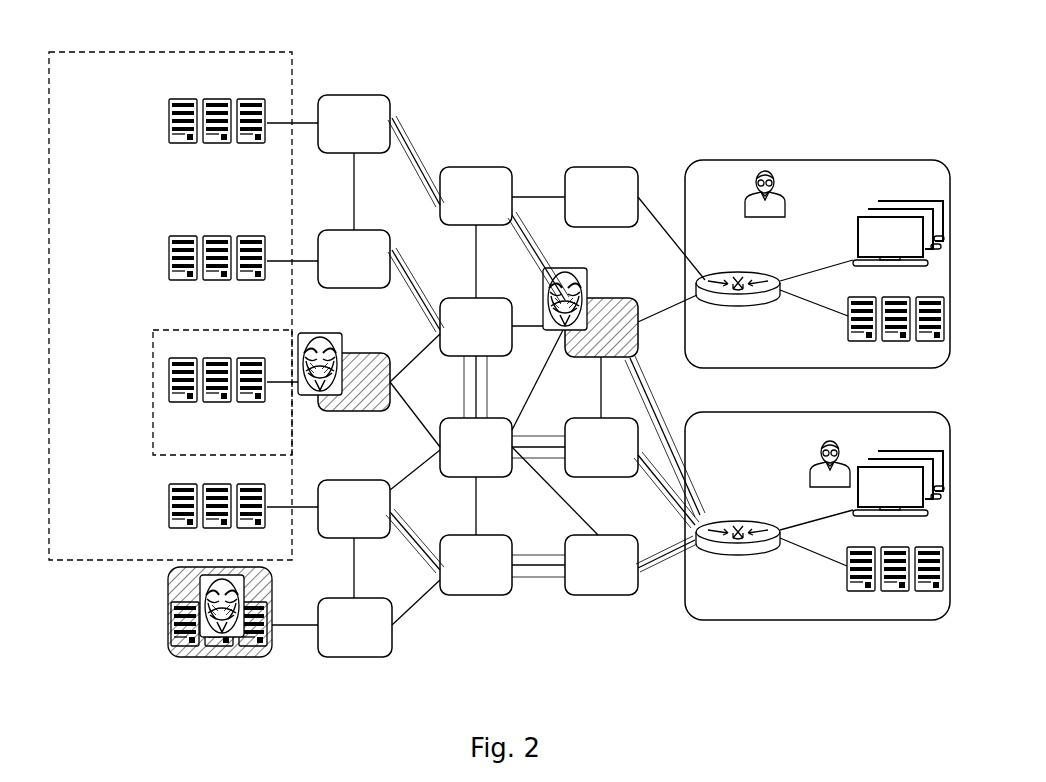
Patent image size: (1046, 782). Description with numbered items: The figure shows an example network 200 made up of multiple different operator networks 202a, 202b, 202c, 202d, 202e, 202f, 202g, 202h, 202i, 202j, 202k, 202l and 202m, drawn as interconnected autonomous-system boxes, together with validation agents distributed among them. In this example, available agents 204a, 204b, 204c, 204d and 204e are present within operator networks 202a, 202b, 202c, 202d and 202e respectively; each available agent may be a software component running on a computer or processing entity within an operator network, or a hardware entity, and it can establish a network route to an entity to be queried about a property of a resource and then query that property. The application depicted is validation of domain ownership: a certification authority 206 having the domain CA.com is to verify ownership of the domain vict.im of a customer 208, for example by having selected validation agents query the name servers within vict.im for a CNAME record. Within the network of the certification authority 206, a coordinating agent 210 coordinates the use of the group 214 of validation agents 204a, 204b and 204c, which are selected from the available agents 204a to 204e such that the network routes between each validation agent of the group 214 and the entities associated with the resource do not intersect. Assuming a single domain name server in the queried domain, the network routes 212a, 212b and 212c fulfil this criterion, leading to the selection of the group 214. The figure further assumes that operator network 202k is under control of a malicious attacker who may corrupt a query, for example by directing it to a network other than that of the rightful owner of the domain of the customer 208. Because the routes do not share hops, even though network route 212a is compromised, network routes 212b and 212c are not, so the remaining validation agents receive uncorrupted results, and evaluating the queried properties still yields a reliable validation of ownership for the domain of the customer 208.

The network 200 is at (521, 685).
The operator network 202a is at (370, 95).
The operator network 202b is at (372, 230).
The operator network 202c is at (355, 353).
The operator network 202d is at (345, 480).
The operator network 202e is at (342, 598).
The operator network 202f is at (485, 167).
The operator network 202g is at (484, 298).
The operator network 202h is at (453, 417).
The operator network 202i is at (490, 535).
The operator network 202j is at (615, 167).
The operator network 202k is at (612, 298).
The operator network 202l is at (591, 418).
The operator network 202m is at (618, 535).
The validation agent 204a is at (169, 123).
The validation agent 204b is at (169, 260).
The validation agent 204c is at (169, 380).
The available agent 204d is at (169, 505).
The available agent 204e is at (168, 623).
The certification authority 206 is at (754, 160).
The customer 208 is at (760, 620).
The coordinating agent 210 is at (858, 216).
The network route 212a is at (410, 146).
The network route 212b is at (410, 269).
The network route 212c is at (416, 536).
The group of validation agents 214 is at (133, 52).